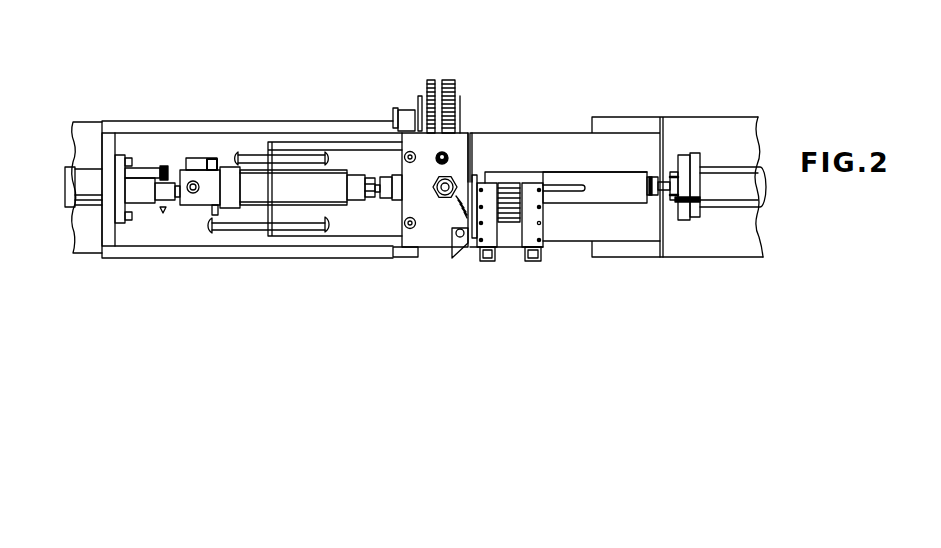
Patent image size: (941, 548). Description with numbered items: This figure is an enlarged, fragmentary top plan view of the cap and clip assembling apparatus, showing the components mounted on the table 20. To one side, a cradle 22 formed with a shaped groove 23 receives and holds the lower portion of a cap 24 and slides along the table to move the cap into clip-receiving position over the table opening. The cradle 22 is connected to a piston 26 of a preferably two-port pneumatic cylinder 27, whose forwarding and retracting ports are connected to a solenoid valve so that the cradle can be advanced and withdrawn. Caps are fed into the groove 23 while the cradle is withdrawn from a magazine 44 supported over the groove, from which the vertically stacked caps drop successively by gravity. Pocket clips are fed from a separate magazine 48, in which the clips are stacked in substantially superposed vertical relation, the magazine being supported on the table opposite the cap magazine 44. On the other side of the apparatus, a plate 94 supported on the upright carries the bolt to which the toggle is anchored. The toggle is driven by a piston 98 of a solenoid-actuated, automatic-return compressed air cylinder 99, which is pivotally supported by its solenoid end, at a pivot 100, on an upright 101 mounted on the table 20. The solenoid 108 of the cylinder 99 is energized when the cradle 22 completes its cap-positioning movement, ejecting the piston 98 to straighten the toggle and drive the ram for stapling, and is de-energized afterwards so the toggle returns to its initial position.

The table 20 is at (522, 142).
The cradle 22 is at (600, 175).
The groove 23 is at (550, 185).
The cap 24 is at (510, 212).
The piston 26 is at (667, 183).
The pneumatic cylinder 27 is at (742, 178).
The magazine 44 is at (535, 258).
The magazine 48 is at (427, 97).
The plate 94 is at (462, 147).
The piston 98 is at (370, 180).
The compressed air cylinder 99 is at (262, 175).
The pivotal support 100 is at (162, 162).
The upright 101 is at (107, 138).
The solenoid 108 is at (207, 160).